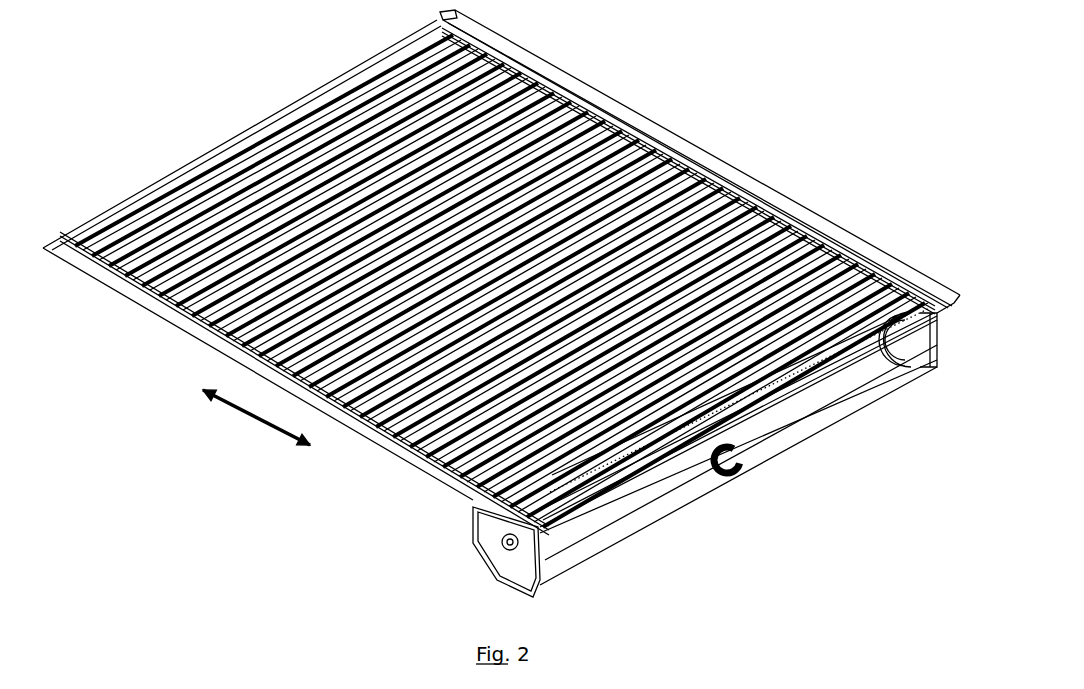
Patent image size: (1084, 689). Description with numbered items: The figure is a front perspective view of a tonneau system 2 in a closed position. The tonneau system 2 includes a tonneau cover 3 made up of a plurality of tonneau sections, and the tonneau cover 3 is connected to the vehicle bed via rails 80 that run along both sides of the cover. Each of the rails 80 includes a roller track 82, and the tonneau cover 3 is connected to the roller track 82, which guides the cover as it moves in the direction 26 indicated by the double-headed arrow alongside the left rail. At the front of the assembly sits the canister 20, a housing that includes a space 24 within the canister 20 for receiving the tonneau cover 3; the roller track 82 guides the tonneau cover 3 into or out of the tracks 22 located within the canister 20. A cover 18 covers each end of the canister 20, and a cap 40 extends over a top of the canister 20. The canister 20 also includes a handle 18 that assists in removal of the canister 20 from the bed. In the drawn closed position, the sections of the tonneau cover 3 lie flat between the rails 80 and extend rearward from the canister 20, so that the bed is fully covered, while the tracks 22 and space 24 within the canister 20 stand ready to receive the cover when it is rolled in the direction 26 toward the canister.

The tonneau system 2 is at (808, 130).
The tonneau cover 3 is at (225, 130).
The cover 18 is at (757, 483).
The canister 20 is at (637, 512).
The tracks 22 is at (893, 378).
The space 24 is at (823, 413).
The direction 26 is at (240, 420).
The cap 40 is at (893, 262).
The rails 80 is at (665, 135).
The roller track 82 is at (688, 171).